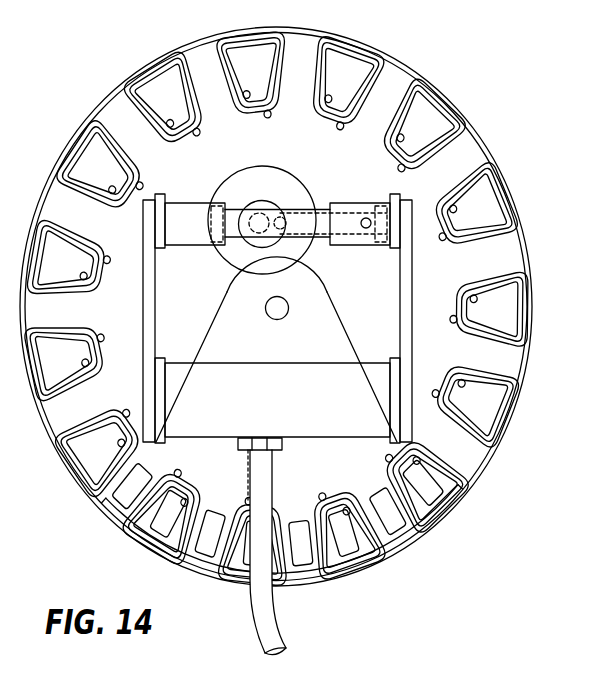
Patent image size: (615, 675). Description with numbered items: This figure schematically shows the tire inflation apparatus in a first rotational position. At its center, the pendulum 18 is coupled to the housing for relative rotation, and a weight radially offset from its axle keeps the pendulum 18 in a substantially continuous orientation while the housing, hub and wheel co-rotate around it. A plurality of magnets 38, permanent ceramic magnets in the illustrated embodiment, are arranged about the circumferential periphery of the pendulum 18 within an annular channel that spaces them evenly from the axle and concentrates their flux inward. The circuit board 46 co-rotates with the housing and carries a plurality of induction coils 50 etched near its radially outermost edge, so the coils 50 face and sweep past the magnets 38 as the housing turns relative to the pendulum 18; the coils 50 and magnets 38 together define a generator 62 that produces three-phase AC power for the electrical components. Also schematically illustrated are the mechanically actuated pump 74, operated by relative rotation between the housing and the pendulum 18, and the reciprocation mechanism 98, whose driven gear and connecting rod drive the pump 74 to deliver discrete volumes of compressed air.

The pendulum 18 is at (339, 314).
The magnets 38 is at (440, 497).
The circuit board 46 is at (485, 145).
The induction coils 50 is at (527, 300).
The generator 62 is at (131, 548).
The pump 74 is at (355, 183).
The reciprocation mechanism 98 is at (267, 153).